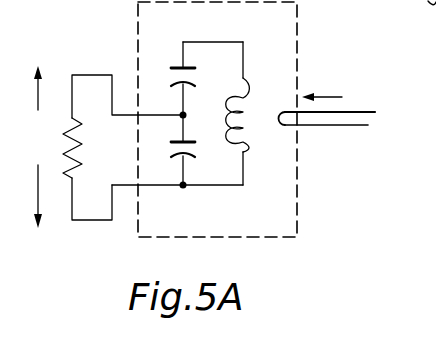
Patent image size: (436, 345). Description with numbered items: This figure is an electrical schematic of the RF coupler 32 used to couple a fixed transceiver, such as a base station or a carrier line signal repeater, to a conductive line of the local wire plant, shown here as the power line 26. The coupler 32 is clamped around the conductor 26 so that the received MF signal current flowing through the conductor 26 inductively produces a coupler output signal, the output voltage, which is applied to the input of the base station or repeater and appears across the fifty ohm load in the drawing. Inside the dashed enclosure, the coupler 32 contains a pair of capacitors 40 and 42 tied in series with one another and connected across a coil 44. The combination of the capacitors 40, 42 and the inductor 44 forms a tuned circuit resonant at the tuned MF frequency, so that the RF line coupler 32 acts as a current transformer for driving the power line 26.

The power line 26 is at (326, 127).
The RF coupler 32 is at (84, 55).
The capacitor 40 is at (196, 83).
The capacitor 42 is at (207, 148).
The coil 44 is at (247, 104).